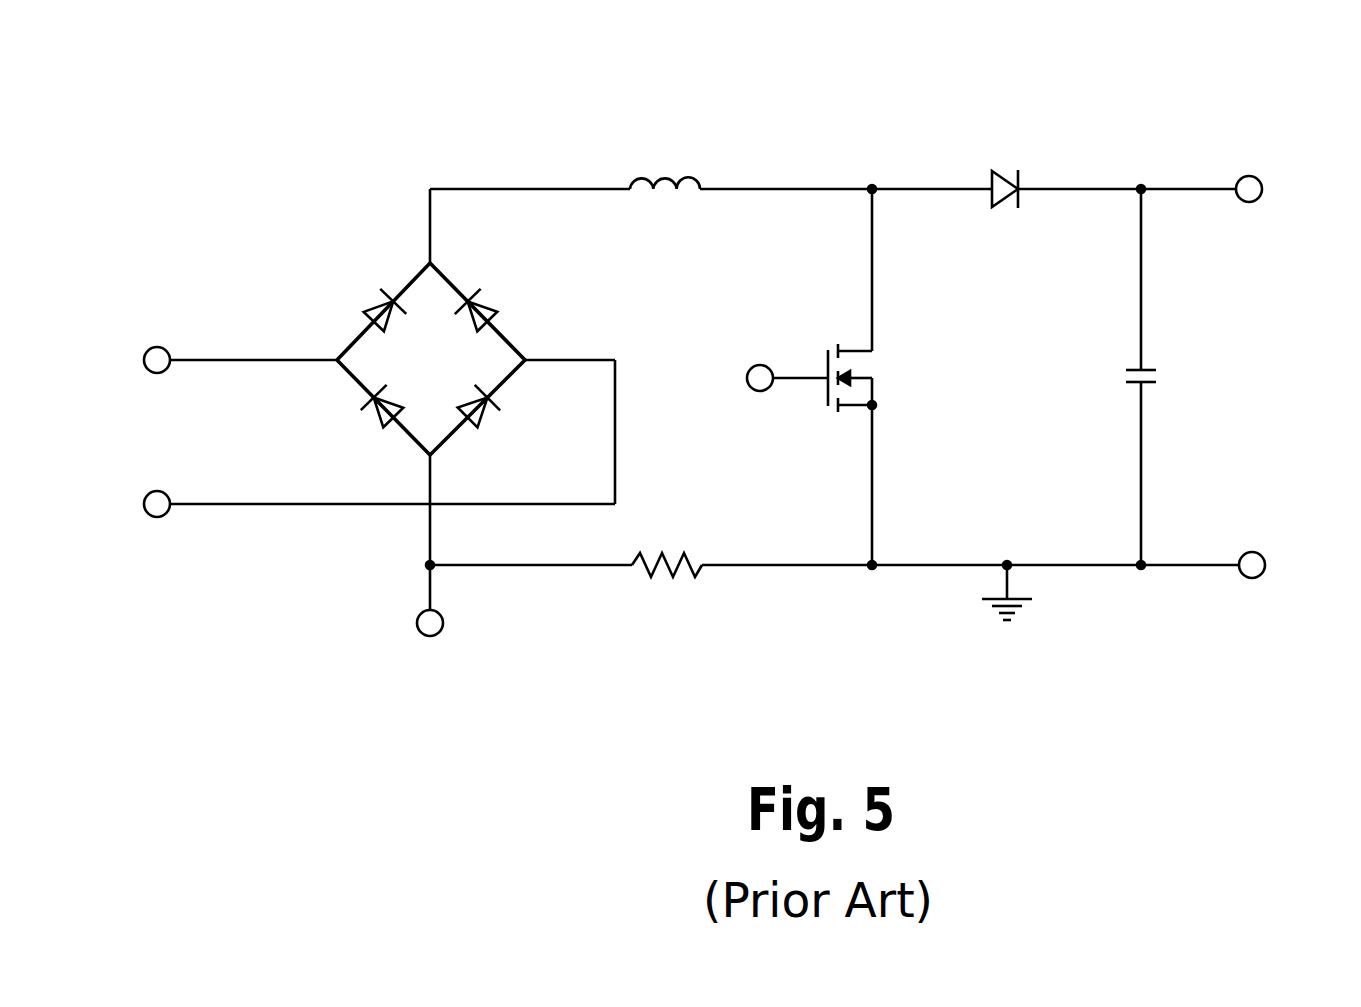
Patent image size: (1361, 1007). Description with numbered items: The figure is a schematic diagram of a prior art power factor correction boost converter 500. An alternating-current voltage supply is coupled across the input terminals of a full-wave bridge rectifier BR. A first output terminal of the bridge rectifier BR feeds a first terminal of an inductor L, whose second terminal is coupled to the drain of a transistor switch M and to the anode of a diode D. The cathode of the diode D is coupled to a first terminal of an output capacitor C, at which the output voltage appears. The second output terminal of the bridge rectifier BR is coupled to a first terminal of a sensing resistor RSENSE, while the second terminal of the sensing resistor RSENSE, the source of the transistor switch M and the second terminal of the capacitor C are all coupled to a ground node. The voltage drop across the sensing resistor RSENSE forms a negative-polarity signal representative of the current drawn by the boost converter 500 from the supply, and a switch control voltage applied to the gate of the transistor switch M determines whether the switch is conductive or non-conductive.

The power factor correction (PFC) boost converter 500 is at (736, 434).
The full-wave bridge rectifier BR is at (412, 359).
The inductor L is at (665, 158).
The diode D is at (1007, 168).
The transistor switch M is at (872, 377).
The output capacitor C is at (1159, 377).
The sensing resistor RSENSE is at (687, 592).